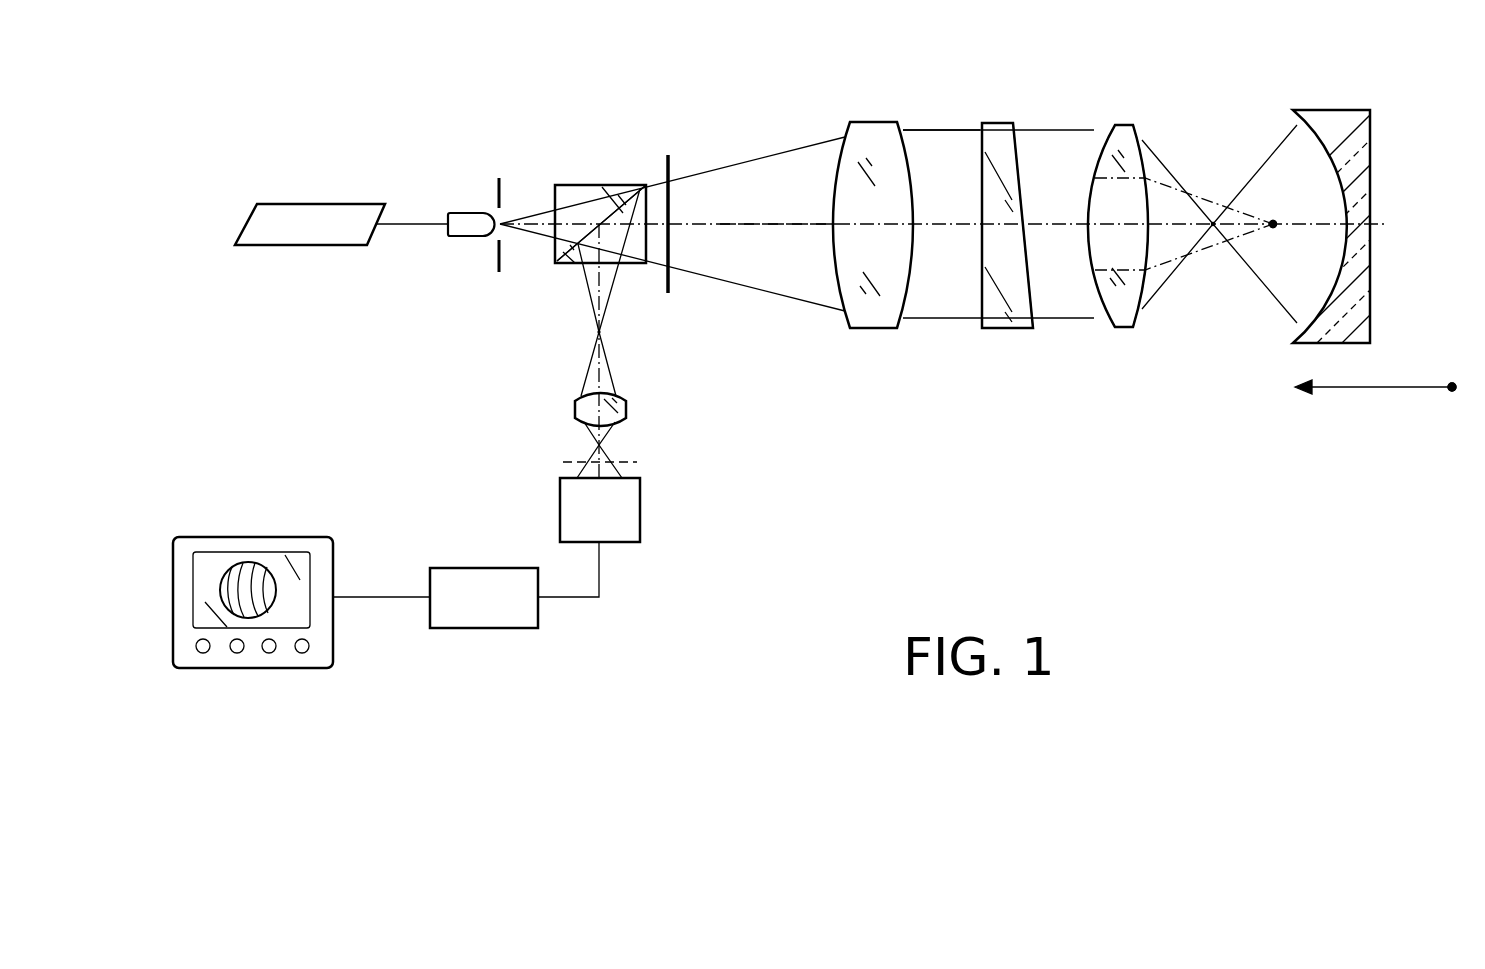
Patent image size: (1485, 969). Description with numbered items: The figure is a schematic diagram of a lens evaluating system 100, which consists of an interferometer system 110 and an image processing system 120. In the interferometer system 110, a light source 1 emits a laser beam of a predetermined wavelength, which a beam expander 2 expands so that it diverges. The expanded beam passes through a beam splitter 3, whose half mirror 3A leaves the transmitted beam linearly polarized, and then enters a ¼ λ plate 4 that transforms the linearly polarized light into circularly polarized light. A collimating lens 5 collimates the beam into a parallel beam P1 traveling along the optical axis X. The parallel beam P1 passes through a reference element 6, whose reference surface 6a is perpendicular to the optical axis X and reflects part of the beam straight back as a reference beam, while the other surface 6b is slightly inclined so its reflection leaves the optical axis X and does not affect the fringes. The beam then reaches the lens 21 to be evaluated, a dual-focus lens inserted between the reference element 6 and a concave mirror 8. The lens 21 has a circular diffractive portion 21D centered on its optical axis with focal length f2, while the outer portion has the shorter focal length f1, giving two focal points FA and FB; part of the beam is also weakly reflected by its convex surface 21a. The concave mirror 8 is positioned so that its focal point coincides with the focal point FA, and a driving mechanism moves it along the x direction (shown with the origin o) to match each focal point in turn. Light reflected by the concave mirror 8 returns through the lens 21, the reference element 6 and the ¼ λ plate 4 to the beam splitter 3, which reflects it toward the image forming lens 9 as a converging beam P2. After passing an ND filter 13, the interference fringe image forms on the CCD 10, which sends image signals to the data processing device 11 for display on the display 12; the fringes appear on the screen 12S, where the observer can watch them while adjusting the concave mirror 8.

The light source 1 is at (330, 203).
The beam expander 2 is at (468, 213).
The beam splitter 3 is at (585, 184).
The half mirror 3A is at (572, 264).
The ¼ λ plate 4 is at (669, 157).
The collimating lens 5 is at (873, 122).
The parallel beam P1 is at (942, 132).
The optical axis X is at (760, 224).
The reference element 6 is at (997, 123).
The reference surface 6a is at (978, 298).
The other surface of reference element 6b is at (1033, 300).
The lens to be evaluated 21 is at (1123, 125).
The diffractive grating portion 21D is at (1092, 200).
The surface of lens 21a is at (1097, 298).
The focal length f1 is at (1187, 209).
The focal length f2 is at (1267, 245).
The focal point FA is at (1214, 232).
The focal point FB is at (1272, 220).
The concave mirror 8 is at (1335, 110).
The x direction x is at (1373, 401).
The origin o is at (1453, 405).
The focused light beam P2 is at (588, 387).
The image forming lens 9 is at (580, 408).
The ND filter 13 is at (632, 462).
The CCD 10 is at (642, 517).
The data processing device 11 is at (475, 630).
The display 12 is at (335, 652).
The screen 12S is at (275, 558).
The lens evaluating system 100 is at (813, 492).
The interferometer system 110 is at (765, 102).
The image processing system 120 is at (602, 660).